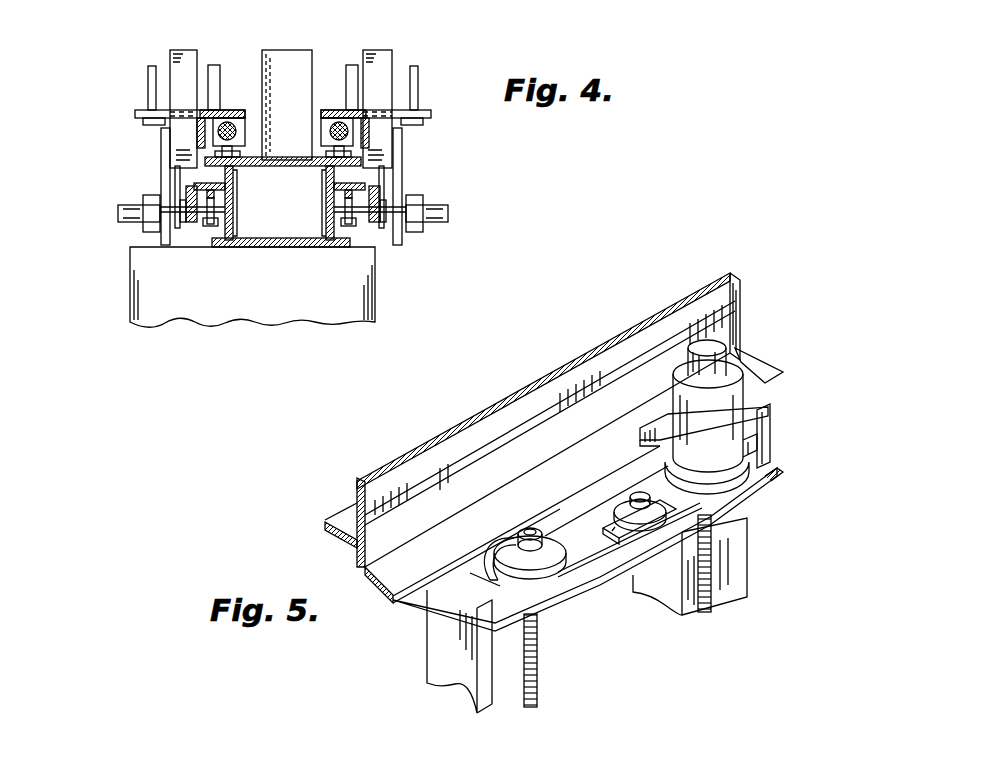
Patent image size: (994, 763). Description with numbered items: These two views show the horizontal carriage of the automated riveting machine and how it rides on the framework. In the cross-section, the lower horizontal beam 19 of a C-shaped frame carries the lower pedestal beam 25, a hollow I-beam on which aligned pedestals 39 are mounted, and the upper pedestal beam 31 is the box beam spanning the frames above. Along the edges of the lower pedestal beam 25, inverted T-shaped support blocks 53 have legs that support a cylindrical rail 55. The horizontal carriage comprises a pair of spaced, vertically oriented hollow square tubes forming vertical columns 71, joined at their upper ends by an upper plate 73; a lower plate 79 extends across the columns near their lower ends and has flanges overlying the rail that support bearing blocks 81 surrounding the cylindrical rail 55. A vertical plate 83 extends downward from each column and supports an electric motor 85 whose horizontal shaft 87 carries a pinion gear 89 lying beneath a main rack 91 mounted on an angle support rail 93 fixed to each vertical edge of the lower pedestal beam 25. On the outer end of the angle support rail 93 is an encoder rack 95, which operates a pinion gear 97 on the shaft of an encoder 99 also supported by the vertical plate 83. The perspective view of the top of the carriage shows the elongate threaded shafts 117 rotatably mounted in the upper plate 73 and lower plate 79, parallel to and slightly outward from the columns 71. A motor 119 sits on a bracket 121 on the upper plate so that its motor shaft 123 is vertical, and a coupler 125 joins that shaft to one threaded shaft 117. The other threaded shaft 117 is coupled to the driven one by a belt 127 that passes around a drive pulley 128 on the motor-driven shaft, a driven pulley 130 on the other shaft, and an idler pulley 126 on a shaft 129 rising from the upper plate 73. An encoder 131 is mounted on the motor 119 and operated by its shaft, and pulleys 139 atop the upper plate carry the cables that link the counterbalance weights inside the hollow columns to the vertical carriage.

In FIG. 4, the lower horizontal beam 19 is at (373, 297).
In FIG. 4, the lower pedestal beam 25 is at (281, 250).
In FIG. 5, the upper pedestal beam 31 is at (427, 463).
In FIG. 4, the pedestal 39 is at (283, 62).
In FIG. 4, the T-shaped support block 53 is at (326, 157).
In FIG. 4, the cylindrical rail 55 is at (321, 126).
In FIG. 4, the vertical column 71 is at (186, 50).
In FIG. 5, the upper plate 73 is at (607, 582).
In FIG. 4, the lower plate 79 is at (219, 110).
In FIG. 4, the bearing block 81 is at (230, 111).
In FIG. 4, the vertical plate 83 is at (161, 136).
In FIG. 4, the electric motor 85 is at (120, 222).
In FIG. 4, the horizontal shaft 87 is at (191, 216).
In FIG. 4, the pinion gear 89 is at (212, 228).
In FIG. 4, the main rack 91 is at (237, 210).
In FIG. 4, the angle support rail 93 is at (233, 186).
In FIG. 4, the encoder rack 95 is at (194, 185).
In FIG. 4, the pinion gear 97 is at (188, 207).
In FIG. 4, the encoder 99 is at (140, 200).
In FIG. 4, the threaded shaft 117 is at (148, 74).
In FIG. 5, the threaded shaft 117 is at (537, 662).
In FIG. 5, the motor 119 is at (743, 407).
In FIG. 5, the bracket 121 is at (660, 423).
In FIG. 5, the motor shaft 123 is at (770, 417).
In FIG. 5, the coupler 125 is at (757, 440).
In FIG. 5, the idler pulley 126 is at (614, 517).
In FIG. 5, the belt 127 is at (705, 514).
In FIG. 5, the drive pulley 128 is at (738, 480).
In FIG. 5, the shaft 129 is at (645, 497).
In FIG. 5, the driven pulley 130 is at (548, 540).
In FIG. 5, the encoder 131 is at (732, 330).
In FIG. 5, the pulley 139 is at (487, 532).